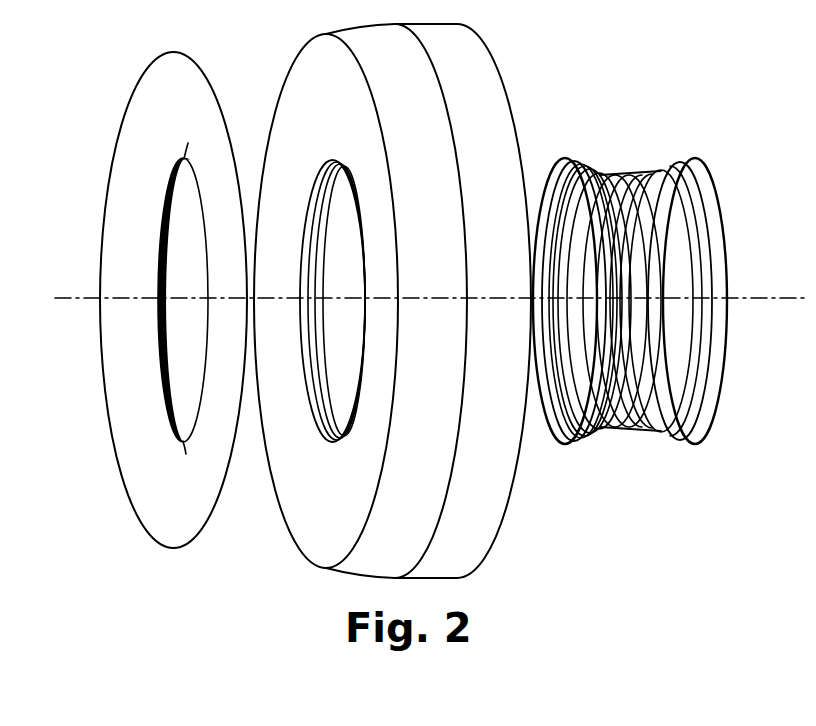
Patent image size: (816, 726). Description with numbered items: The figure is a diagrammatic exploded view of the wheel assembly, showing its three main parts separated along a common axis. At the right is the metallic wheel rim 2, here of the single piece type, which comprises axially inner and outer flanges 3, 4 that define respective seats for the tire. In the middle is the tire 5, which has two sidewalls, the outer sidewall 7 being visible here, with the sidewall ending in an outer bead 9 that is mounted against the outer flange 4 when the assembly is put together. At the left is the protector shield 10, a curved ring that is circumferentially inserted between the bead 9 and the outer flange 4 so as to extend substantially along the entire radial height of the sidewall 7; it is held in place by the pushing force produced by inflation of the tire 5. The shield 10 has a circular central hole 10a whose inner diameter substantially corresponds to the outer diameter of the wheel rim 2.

The wheel rim 2 is at (630, 300).
The inner flange 3 is at (562, 157).
The outer flange 4 is at (690, 157).
The tire 5 is at (398, 301).
The sidewall 7 is at (325, 504).
The outer bead 9 is at (345, 159).
The protector shield 10 is at (149, 300).
The circular central hole 10a is at (173, 235).